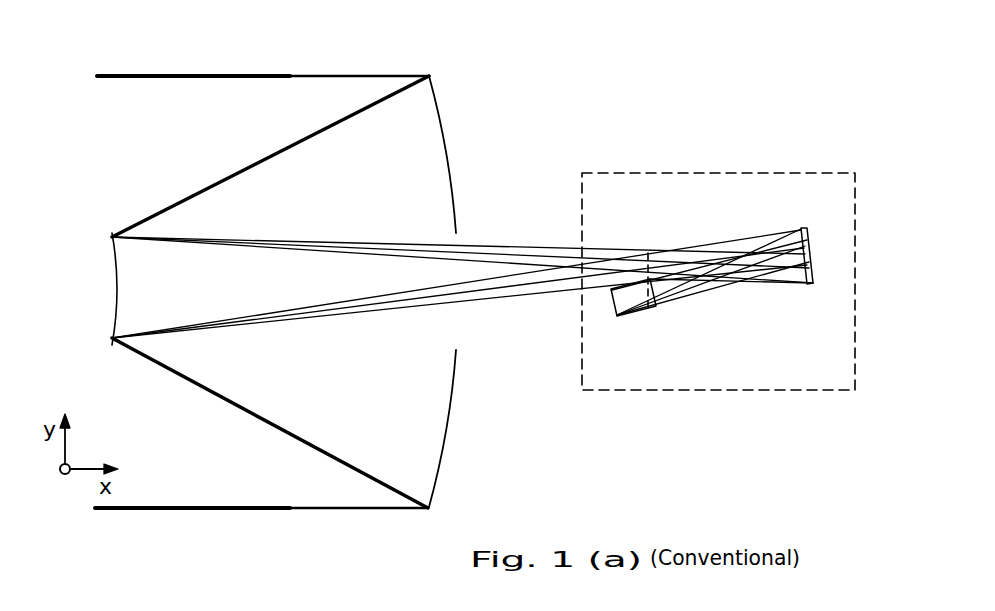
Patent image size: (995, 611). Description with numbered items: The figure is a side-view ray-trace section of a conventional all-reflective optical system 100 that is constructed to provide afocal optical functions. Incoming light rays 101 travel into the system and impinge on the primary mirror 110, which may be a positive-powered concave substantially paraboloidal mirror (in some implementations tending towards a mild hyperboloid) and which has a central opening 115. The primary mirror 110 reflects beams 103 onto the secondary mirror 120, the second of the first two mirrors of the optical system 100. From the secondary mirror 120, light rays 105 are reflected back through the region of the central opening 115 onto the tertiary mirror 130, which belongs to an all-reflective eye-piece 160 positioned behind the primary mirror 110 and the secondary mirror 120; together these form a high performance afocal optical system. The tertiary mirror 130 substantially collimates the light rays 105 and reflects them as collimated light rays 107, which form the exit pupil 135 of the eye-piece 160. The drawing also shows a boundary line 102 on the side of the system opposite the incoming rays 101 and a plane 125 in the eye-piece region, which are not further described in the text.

The all-reflective optical system 100 is at (503, 58).
The incoming light rays 101 is at (228, 75).
The lower housing wall 102 is at (283, 510).
The beams 103 is at (208, 186).
The light rays 105 is at (360, 245).
The collimated light rays 107 is at (748, 296).
The primary mirror 110 is at (449, 140).
The central opening 115 is at (478, 330).
The secondary mirror 120 is at (116, 289).
The aperture plane 125 is at (650, 297).
The tertiary mirror 130 is at (811, 250).
The exit pupil 135 is at (606, 307).
The all-reflective eye-piece 160 is at (729, 156).